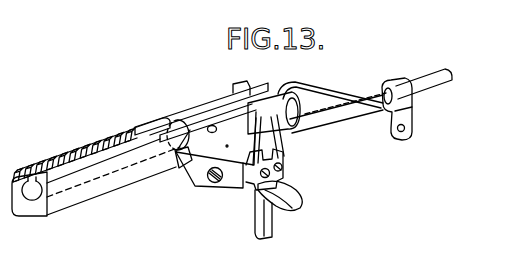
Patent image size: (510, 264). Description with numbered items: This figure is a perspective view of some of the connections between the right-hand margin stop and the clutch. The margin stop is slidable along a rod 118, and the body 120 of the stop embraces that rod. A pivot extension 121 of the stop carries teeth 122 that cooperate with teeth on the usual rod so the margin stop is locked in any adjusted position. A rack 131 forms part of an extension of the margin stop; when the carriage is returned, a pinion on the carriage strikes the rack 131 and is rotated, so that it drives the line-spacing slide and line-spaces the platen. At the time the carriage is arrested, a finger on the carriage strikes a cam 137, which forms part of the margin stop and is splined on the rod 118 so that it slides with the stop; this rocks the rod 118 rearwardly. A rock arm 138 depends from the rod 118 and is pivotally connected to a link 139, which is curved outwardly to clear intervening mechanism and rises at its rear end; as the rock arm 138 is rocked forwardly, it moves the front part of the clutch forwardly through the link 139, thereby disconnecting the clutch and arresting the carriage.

The rack 131 is at (33, 168).
The teeth 122 is at (243, 95).
The link 139 is at (308, 84).
The rock arm 138 is at (412, 113).
The rod 118 is at (329, 128).
The pivot extension 121 is at (294, 116).
The body 120 is at (204, 168).
The cam 137 is at (181, 166).